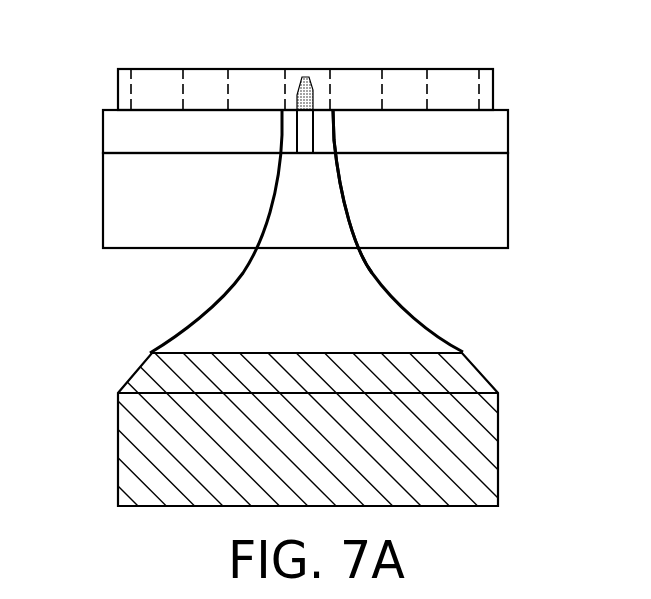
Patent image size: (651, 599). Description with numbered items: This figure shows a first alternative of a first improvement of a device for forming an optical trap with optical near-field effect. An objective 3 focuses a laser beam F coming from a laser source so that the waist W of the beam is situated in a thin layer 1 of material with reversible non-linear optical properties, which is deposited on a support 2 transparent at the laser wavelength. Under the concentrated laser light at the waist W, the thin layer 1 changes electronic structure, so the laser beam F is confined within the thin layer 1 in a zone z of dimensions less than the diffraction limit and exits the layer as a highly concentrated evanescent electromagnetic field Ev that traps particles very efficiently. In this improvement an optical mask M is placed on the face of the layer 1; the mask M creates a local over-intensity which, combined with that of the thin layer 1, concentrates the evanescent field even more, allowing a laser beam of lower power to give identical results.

The optical mask M is at (155, 82).
The evanescent electromagnetic field Ev is at (305, 80).
The zone z is at (305, 130).
The thin layer 1 is at (118, 142).
The support 2 is at (118, 213).
The waist W is at (345, 210).
The laser beam F is at (383, 315).
The objective 3 is at (482, 452).